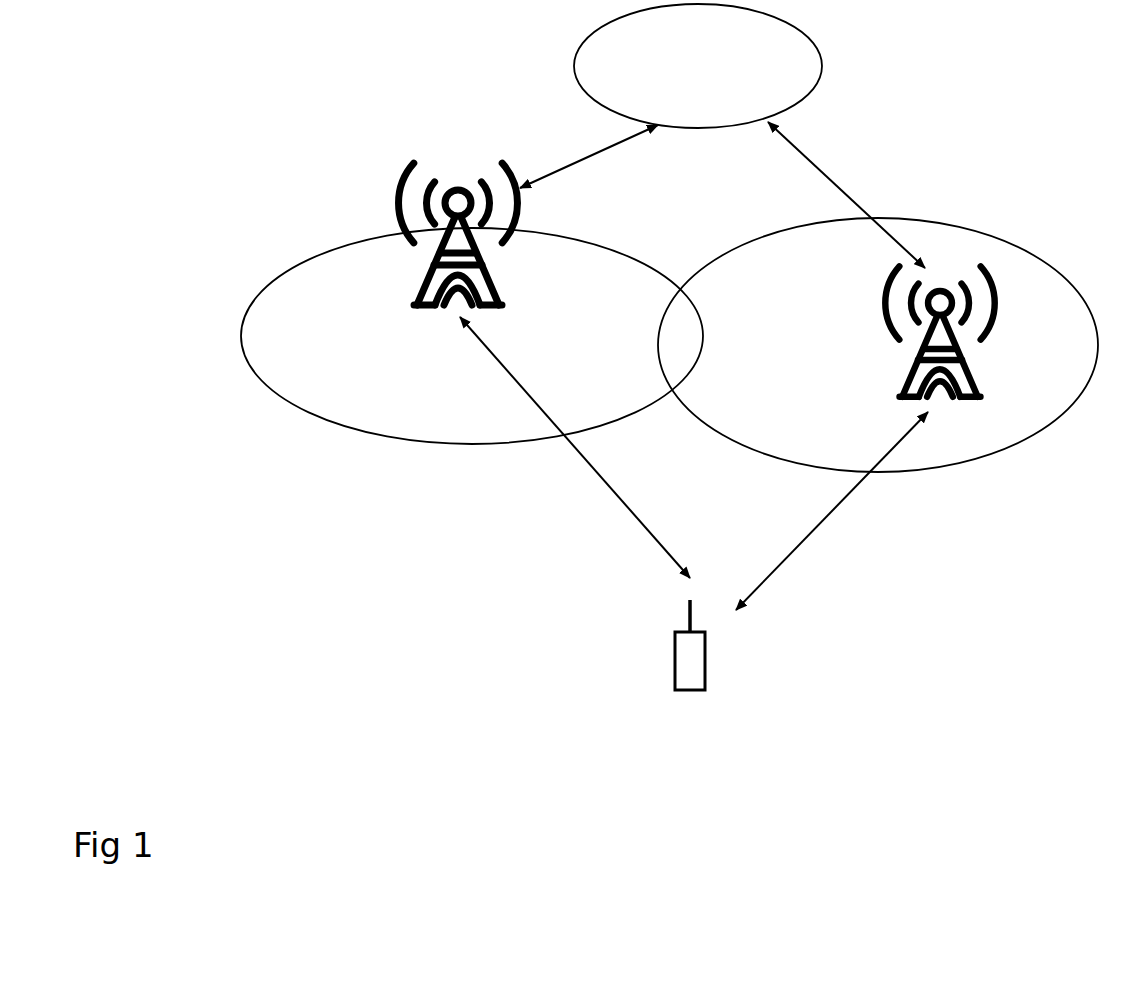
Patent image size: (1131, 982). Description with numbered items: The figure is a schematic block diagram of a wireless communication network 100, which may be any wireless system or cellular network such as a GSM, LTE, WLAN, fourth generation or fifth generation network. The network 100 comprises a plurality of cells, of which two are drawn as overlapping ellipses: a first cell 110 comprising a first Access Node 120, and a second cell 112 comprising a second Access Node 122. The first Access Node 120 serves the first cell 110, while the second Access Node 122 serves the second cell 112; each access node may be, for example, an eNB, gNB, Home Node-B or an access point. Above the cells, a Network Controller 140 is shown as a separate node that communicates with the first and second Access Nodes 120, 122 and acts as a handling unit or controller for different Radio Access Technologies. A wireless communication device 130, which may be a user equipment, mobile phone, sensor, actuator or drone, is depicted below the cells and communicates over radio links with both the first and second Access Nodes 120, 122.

The wireless communication network 100 is at (960, 700).
The first cell 110 is at (962, 445).
The second cell 112 is at (307, 283).
The first Access Node 120 is at (960, 372).
The second Access Node 122 is at (427, 290).
The wireless communication device 130 is at (689, 658).
The Network Controller 140 is at (698, 66).